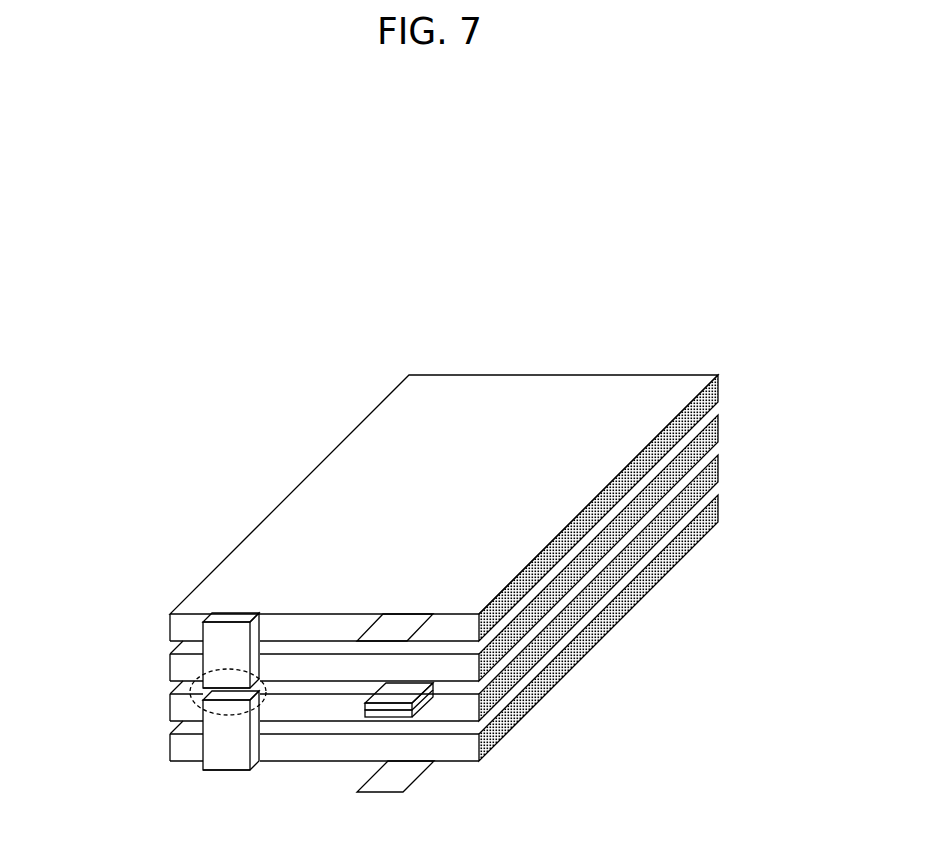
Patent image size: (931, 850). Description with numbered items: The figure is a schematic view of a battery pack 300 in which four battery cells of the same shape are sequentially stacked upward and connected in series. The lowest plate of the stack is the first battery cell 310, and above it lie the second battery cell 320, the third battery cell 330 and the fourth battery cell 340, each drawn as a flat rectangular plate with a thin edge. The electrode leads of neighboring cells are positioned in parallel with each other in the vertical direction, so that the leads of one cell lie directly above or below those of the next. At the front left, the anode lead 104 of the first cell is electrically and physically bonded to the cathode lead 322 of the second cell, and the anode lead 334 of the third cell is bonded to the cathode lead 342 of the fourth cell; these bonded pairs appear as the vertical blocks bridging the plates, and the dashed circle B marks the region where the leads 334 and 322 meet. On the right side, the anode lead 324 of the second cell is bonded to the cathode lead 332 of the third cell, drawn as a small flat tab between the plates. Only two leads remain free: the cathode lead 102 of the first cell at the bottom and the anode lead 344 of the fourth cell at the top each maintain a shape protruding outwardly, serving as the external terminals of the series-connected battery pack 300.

The battery pack 300 is at (202, 357).
The first layer 310 is at (712, 514).
The second battery cell 320 is at (712, 474).
The third battery cell 330 is at (712, 434).
The fourth battery cell 340 is at (712, 394).
The cathode lead 342 is at (232, 618).
The anode lead 344 is at (416, 634).
The cathode lead 332 is at (425, 686).
The anode lead 334 is at (223, 680).
The cathode lead 322 is at (223, 698).
The anode lead 324 is at (425, 707).
The anode lead 104 is at (255, 765).
The cathode lead 102 is at (405, 777).
The region B is at (228, 670).